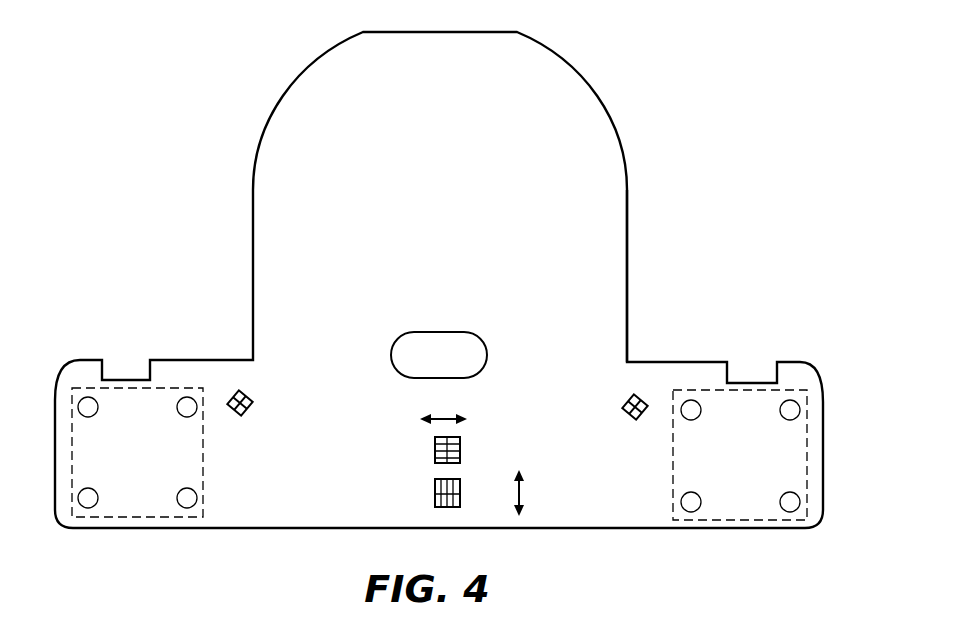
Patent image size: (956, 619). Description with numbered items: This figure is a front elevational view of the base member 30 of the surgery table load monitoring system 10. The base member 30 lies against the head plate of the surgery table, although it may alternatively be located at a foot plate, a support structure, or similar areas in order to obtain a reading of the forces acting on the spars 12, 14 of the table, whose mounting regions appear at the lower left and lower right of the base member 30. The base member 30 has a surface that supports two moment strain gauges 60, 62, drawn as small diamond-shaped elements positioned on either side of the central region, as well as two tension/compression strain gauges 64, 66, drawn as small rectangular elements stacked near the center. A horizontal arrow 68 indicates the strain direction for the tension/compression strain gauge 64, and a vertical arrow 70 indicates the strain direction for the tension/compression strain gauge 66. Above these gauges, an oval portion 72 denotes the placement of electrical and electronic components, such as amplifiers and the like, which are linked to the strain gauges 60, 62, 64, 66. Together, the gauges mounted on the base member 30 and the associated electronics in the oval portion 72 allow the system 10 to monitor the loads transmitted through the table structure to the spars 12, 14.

The surgery table load monitoring system 10 is at (655, 78).
The spar 12 is at (737, 410).
The spar 14 is at (141, 405).
The base member 30 is at (600, 270).
The moment strain gauge 60 is at (288, 162).
The moment strain gauge 62 is at (642, 396).
The tension/compression strain gauge 64 is at (434, 450).
The tension/compression strain gauge 66 is at (434, 493).
The arrow 68 is at (448, 416).
The arrow 70 is at (523, 492).
The oval portion 72 is at (440, 350).